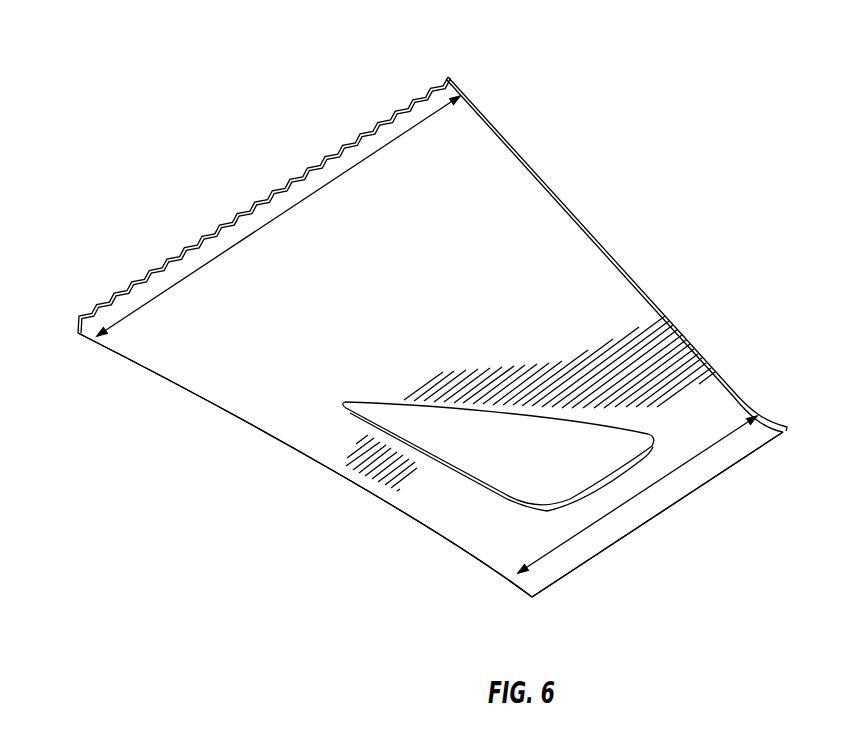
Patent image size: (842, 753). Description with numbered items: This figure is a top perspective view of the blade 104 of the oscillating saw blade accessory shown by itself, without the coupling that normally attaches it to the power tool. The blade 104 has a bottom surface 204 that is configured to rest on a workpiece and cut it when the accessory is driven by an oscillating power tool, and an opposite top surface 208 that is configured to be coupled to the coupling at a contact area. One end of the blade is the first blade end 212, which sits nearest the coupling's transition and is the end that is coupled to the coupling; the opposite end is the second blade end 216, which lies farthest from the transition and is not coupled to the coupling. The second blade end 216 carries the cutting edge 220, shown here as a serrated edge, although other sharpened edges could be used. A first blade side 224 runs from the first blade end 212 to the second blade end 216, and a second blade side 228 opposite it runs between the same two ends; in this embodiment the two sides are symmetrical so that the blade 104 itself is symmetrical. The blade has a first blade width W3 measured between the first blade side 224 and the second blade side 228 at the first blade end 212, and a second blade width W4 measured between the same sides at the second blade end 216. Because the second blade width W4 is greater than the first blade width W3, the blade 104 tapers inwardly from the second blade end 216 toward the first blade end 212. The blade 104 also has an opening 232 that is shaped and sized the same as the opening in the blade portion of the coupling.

The blade 104 is at (453, 335).
The bottom surface 204 is at (535, 165).
The top surface 208 is at (418, 316).
The first blade end 212 is at (760, 433).
The second blade end 216 is at (446, 120).
The cutting edge 220 is at (338, 133).
The first blade side 224 is at (292, 450).
The second blade side 228 is at (594, 237).
The opening 232 is at (441, 452).
The first blade width W3 is at (628, 503).
The second blade width W4 is at (135, 318).